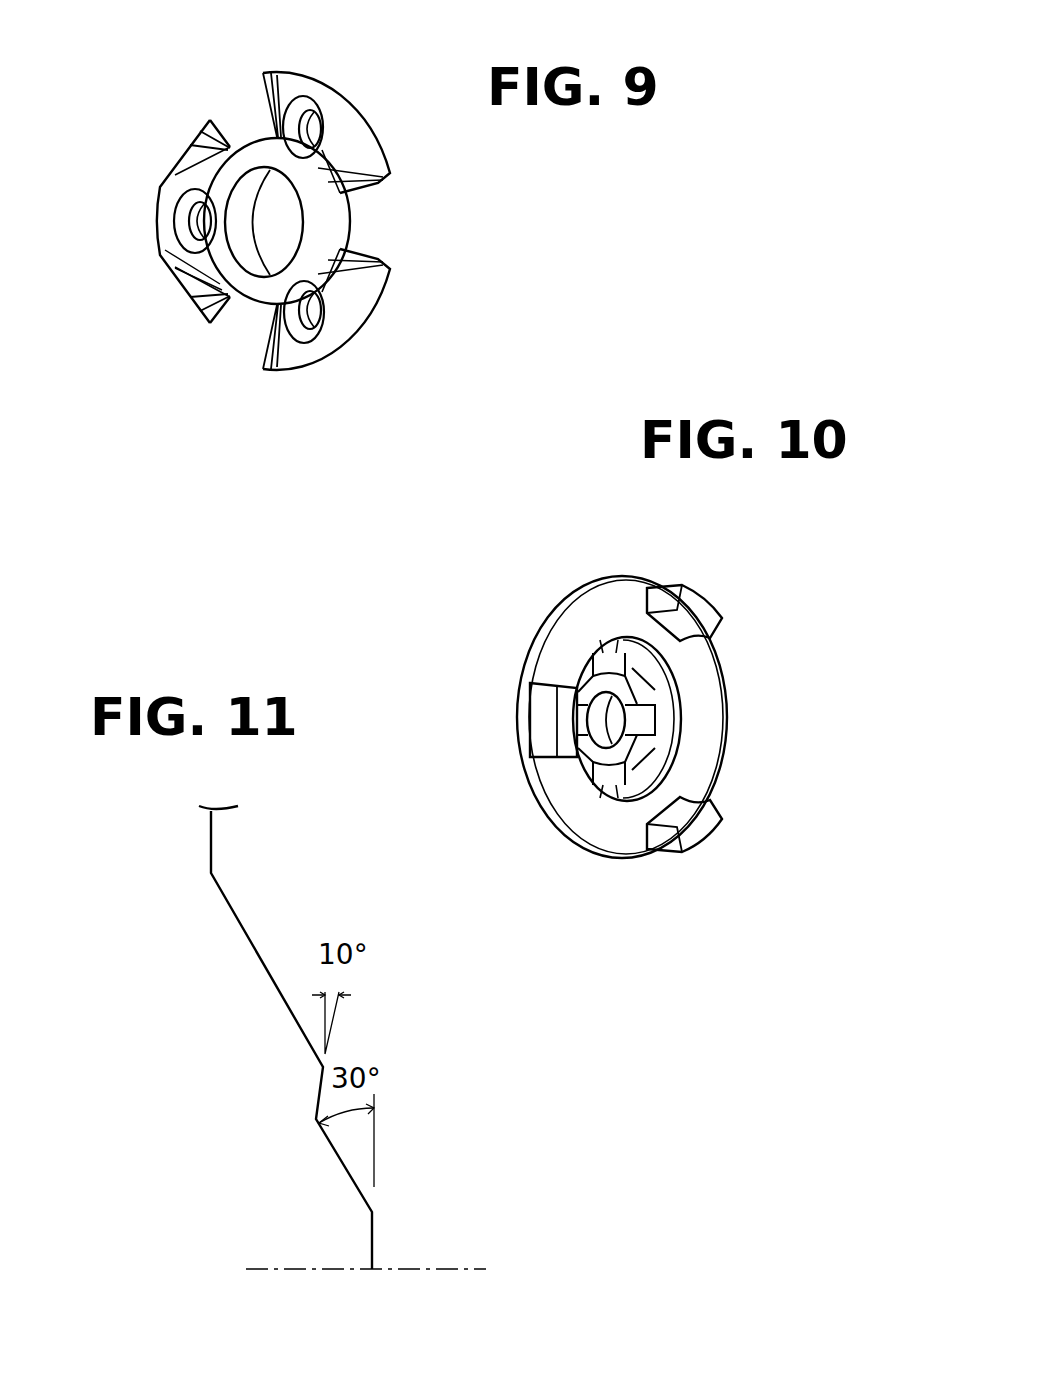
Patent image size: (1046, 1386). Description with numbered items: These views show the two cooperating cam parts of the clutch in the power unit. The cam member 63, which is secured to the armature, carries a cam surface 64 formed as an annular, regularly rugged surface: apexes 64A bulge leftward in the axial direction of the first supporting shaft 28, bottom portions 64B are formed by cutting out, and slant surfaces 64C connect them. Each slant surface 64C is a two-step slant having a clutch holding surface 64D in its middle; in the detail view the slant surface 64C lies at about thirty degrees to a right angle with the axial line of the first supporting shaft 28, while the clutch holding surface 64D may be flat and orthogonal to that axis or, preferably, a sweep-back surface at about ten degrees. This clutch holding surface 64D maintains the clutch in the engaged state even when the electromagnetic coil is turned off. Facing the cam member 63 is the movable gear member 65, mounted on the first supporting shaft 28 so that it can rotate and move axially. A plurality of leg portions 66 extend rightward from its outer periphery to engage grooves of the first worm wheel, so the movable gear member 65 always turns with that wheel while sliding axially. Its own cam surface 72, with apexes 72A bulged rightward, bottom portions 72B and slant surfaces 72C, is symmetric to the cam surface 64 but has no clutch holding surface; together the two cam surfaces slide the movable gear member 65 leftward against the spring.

In FIG. 9, the cam member 63 is at (180, 83).
In FIG. 9, the cam surface 64 is at (172, 264).
In FIG. 11, the cam surface 64 is at (262, 963).
In FIG. 9, the apexes 64A is at (165, 200).
In FIG. 11, the apexes 64A is at (208, 836).
In FIG. 9, the bottom portions 64B is at (243, 117).
In FIG. 11, the bottom portions 64B is at (376, 1242).
In FIG. 9, the slant surfaces 64C is at (347, 137).
In FIG. 11, the slant surfaces 64C is at (230, 906).
In FIG. 9, the clutch holding surface 64D is at (365, 137).
In FIG. 11, the clutch holding surface 64D is at (318, 1096).
In FIG. 10, the movable gear member 65 is at (566, 561).
In FIG. 10, the leg portions 66 is at (691, 604).
In FIG. 10, the cam surface 72 is at (610, 656).
In FIG. 10, the apexes 72A is at (641, 665).
In FIG. 10, the bottom portions 72B is at (649, 716).
In FIG. 10, the slant surfaces 72C is at (599, 659).
In FIG. 11, the first supporting shaft 28 is at (432, 1270).